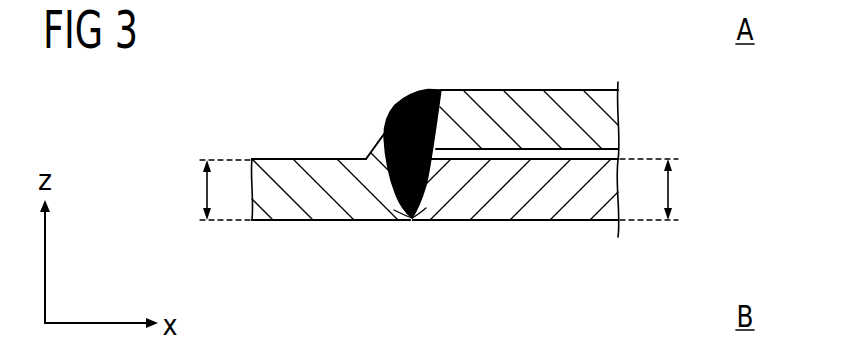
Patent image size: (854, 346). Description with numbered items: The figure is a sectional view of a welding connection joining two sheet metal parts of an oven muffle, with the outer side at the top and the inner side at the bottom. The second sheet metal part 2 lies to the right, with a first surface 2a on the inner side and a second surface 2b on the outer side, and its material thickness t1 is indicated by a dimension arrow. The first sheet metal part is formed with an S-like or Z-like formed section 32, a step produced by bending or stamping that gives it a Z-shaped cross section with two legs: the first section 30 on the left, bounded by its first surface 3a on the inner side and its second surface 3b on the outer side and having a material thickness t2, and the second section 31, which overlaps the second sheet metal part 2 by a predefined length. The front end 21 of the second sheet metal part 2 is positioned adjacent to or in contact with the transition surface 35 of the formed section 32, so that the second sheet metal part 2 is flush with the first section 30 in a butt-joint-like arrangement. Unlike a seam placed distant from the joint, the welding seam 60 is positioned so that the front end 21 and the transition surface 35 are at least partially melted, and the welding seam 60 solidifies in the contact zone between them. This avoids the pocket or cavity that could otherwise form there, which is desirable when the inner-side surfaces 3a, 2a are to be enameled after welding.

The second sheet metal part 2 is at (592, 204).
The first surface of second sheet metal part 2a is at (520, 220).
The second surface of second sheet metal part 2b is at (593, 150).
The front end 21 is at (415, 216).
The first section 30 is at (288, 202).
The second section 31 is at (555, 117).
The S-like or Z-like formed section 32 is at (397, 110).
The first surface of first sheet metal part 3a is at (311, 221).
The second surface of first sheet metal part 3b is at (278, 158).
The transition surface 35 is at (397, 210).
The welding seam 60 is at (420, 90).
The material thickness t1 is at (656, 189).
The material thickness t2 is at (214, 190).